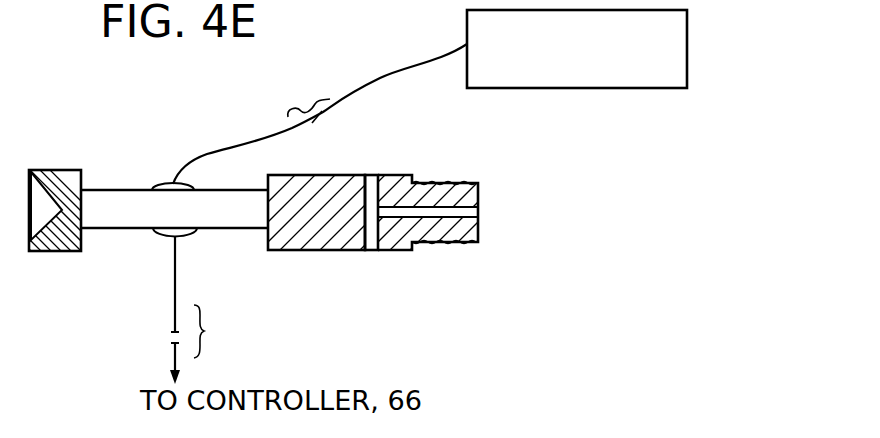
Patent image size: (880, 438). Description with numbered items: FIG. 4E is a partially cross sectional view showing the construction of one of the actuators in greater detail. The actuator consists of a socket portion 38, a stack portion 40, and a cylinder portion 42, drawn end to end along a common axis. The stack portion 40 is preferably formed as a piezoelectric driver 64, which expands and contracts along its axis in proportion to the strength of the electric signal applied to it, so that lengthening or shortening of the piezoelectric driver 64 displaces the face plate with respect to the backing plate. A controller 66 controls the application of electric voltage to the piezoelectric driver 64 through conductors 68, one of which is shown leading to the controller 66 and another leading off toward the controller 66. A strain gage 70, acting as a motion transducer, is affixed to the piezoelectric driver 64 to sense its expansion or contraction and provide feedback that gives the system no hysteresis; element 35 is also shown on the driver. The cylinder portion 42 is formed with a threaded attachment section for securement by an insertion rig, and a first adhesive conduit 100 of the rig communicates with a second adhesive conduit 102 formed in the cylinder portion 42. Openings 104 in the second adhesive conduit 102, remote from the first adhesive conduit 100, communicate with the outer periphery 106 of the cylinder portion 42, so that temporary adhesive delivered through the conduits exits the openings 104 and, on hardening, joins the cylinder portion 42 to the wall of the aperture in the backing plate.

The sensor element 35 is at (170, 183).
The socket portion 38 is at (62, 252).
The stack portion 40 is at (237, 230).
The cylinder portion 42 is at (310, 175).
The piezoelectric driver 64 is at (133, 190).
The controller 66 is at (689, 49).
The conductors 68 is at (248, 142).
The strain gage 70 is at (162, 237).
The first adhesive conduit 100 is at (480, 186).
The second adhesive conduit 102 is at (362, 182).
The openings 104 is at (372, 176).
The outer periphery 106 is at (318, 252).